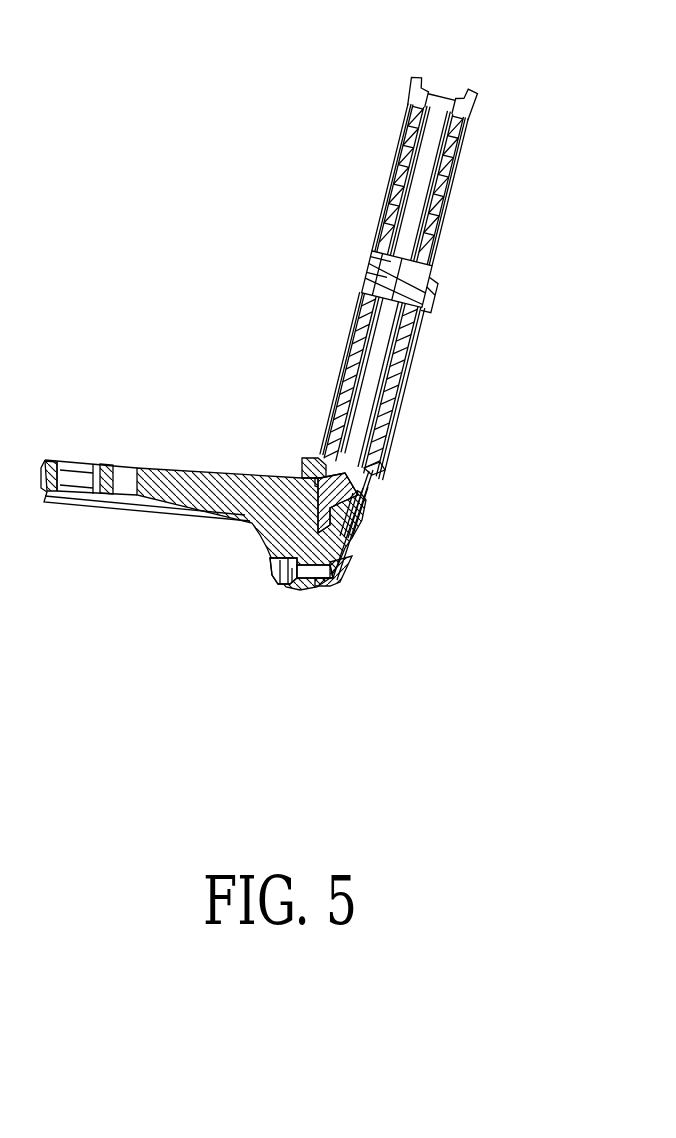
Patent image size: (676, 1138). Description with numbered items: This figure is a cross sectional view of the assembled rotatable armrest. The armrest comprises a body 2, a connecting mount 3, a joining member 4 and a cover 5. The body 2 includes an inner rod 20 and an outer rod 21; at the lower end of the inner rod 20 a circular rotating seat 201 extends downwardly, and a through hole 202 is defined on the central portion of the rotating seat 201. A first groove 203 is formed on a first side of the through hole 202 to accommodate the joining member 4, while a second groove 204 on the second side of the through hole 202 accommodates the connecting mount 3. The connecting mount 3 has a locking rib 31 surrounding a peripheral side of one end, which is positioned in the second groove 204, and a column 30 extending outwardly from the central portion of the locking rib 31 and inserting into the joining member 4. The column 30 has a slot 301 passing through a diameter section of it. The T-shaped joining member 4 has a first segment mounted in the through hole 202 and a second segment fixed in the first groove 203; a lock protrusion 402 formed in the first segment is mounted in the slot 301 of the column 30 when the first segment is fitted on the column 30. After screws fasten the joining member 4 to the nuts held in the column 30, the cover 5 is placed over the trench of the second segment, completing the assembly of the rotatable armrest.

The body 2 is at (157, 197).
The connecting mount 3 is at (162, 466).
The joining member 4 is at (340, 530).
The cover 5 is at (363, 505).
The inner rod 20 is at (370, 325).
The outer rod 21 is at (398, 385).
The column 30 is at (368, 487).
The locking rib 31 is at (278, 570).
The rotating seat 201 is at (295, 582).
The through hole 202 is at (367, 460).
The first groove 203 is at (330, 583).
The second groove 204 is at (313, 452).
The slot 301 is at (353, 542).
The lock protrusion 402 is at (305, 480).